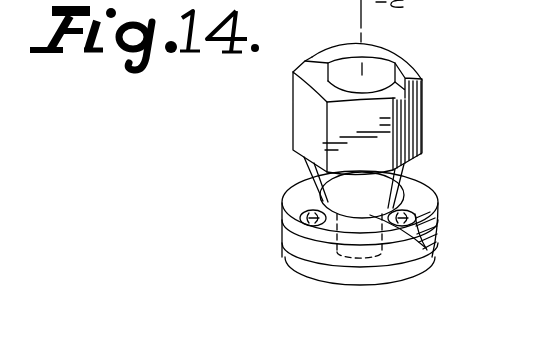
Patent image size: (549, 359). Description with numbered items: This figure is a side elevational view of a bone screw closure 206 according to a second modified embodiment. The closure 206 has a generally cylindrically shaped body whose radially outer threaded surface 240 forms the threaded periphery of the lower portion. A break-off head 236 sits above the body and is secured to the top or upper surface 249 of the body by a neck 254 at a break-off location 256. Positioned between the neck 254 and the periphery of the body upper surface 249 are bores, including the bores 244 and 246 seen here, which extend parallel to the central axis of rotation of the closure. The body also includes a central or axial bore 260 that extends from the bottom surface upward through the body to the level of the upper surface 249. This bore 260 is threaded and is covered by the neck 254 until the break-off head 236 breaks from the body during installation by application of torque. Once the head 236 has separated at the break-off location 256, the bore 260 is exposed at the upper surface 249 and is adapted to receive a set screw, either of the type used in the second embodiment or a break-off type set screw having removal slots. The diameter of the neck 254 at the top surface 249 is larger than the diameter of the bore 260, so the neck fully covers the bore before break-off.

The bone screw closure 206 is at (398, 283).
The break-off head 236 is at (425, 105).
The radially outer threaded surface 240 is at (320, 259).
The bore 244 is at (313, 228).
The bore 246 is at (430, 202).
The top or upper surface of the body 249 is at (297, 203).
The neck 254 is at (413, 193).
The break-off location 256 is at (427, 248).
The central or axial bore 260 is at (342, 285).